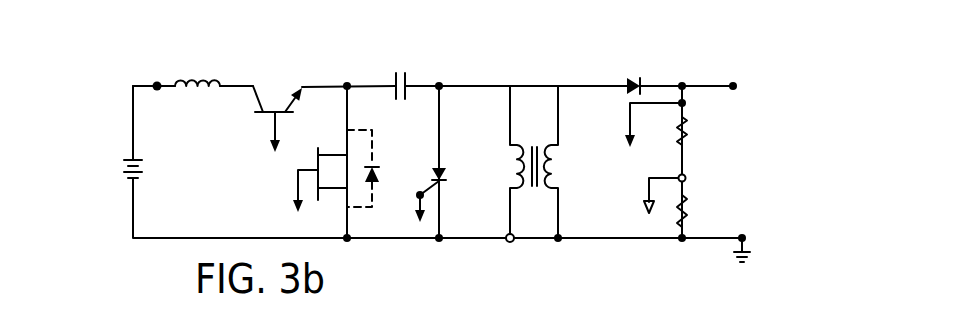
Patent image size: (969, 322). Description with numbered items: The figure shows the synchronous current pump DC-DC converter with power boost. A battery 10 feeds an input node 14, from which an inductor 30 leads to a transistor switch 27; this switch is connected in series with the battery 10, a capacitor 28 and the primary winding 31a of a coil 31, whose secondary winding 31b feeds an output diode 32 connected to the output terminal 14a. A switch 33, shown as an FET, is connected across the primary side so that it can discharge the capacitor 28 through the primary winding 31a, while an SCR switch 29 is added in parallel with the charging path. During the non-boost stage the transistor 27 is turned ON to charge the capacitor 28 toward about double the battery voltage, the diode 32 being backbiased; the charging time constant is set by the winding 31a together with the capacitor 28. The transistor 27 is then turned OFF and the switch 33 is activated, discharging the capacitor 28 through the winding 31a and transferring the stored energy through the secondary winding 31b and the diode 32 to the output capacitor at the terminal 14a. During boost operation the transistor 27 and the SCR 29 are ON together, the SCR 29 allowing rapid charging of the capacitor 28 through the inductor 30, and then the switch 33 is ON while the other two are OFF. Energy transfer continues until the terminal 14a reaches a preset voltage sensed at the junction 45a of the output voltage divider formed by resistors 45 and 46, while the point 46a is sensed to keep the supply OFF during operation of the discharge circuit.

The battery 10 is at (121, 168).
The input node 14 is at (157, 74).
The output terminal 14a is at (750, 74).
The inductor 30 is at (197, 71).
The transistor switch 27 is at (277, 109).
The capacitor 28 is at (399, 86).
The switch 33 is at (320, 169).
The SCR switch 29 is at (425, 189).
The coil 31 is at (525, 194).
The primary winding 31a is at (505, 162).
The secondary winding 31b is at (561, 162).
The diode 32 is at (634, 72).
The point of voltage divider 46a is at (677, 120).
The resistor of output voltage divider 46 is at (696, 131).
The junction of voltage divider 45a is at (687, 190).
The resistor of output voltage divider 45 is at (696, 211).